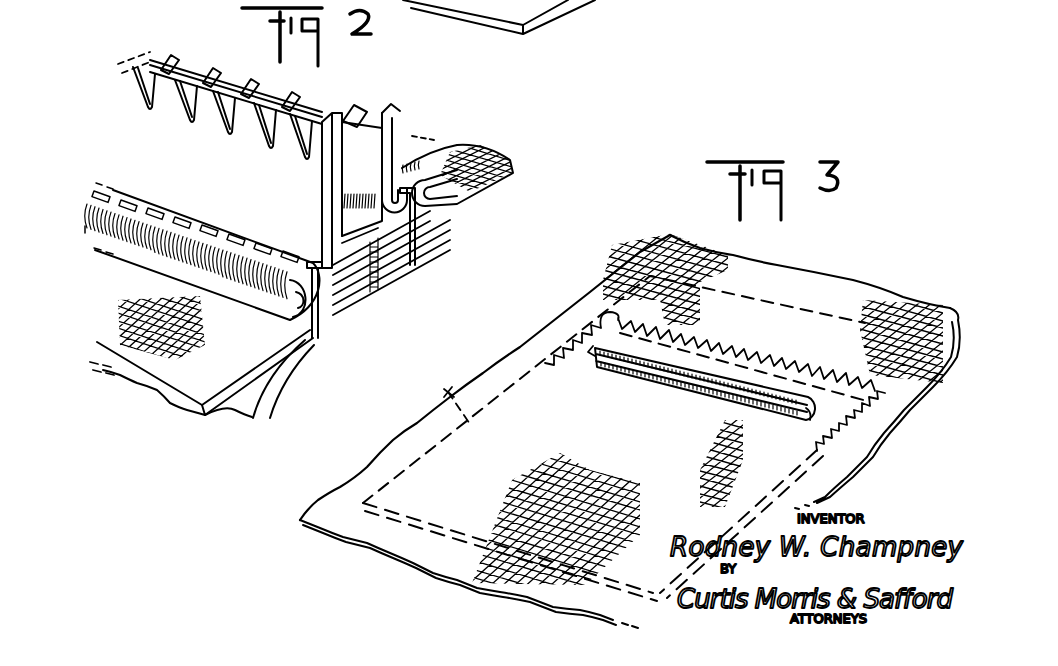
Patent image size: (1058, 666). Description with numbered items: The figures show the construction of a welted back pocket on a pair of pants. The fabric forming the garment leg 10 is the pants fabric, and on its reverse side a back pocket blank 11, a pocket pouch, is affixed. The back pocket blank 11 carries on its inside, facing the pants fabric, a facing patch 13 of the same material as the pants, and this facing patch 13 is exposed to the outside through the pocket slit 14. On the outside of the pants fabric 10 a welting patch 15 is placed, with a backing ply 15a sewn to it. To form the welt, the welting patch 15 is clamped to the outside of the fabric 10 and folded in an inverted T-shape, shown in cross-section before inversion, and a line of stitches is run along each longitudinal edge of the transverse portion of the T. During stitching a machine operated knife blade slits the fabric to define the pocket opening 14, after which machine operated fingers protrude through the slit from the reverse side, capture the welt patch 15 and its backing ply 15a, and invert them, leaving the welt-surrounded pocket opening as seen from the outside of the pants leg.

In FIG. 2, the fabric forming the garment leg 10 is at (133, 343).
In FIG. 3, the fabric forming the garment leg 10 is at (660, 257).
In FIG. 2, the back pocket blank 11 is at (267, 390).
In FIG. 3, the back pocket blank 11 is at (450, 393).
In FIG. 3, the facing patch 13 is at (722, 350).
In FIG. 2, the pocket slit 14 is at (373, 292).
In FIG. 3, the pocket slit 14 is at (703, 384).
In FIG. 2, the welting patch 15 is at (397, 146).
In FIG. 3, the welting patch 15 is at (610, 367).
In FIG. 2, the backing ply 15a is at (362, 111).